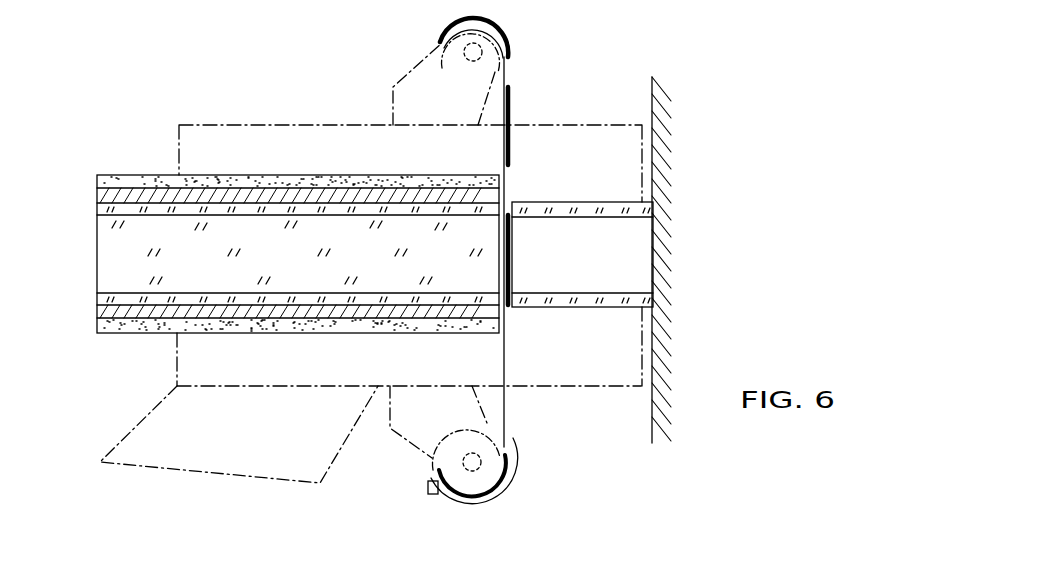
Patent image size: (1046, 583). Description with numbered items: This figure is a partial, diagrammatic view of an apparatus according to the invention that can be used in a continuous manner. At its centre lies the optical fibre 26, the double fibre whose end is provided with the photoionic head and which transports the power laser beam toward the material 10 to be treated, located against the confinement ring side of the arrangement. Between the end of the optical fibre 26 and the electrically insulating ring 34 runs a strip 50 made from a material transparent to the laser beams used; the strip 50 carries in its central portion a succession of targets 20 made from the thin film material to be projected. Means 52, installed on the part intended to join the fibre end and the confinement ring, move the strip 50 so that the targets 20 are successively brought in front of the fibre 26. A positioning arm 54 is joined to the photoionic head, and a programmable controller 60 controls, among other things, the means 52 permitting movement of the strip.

The material 10 is at (658, 136).
The targets 20 is at (513, 107).
The optical fibre 26 is at (88, 203).
The electrically insulating ring 34 is at (643, 300).
The strip 50 is at (509, 63).
The means for moving the strip 52 is at (399, 79).
The positioning arm 54 is at (143, 418).
The programmable controller 60 is at (430, 488).